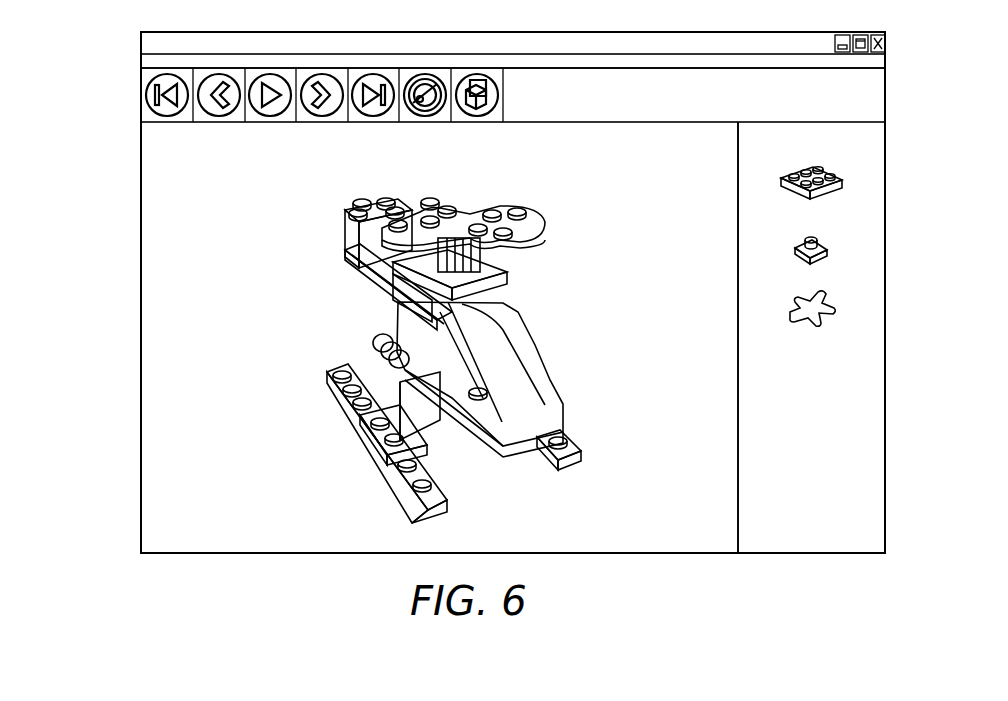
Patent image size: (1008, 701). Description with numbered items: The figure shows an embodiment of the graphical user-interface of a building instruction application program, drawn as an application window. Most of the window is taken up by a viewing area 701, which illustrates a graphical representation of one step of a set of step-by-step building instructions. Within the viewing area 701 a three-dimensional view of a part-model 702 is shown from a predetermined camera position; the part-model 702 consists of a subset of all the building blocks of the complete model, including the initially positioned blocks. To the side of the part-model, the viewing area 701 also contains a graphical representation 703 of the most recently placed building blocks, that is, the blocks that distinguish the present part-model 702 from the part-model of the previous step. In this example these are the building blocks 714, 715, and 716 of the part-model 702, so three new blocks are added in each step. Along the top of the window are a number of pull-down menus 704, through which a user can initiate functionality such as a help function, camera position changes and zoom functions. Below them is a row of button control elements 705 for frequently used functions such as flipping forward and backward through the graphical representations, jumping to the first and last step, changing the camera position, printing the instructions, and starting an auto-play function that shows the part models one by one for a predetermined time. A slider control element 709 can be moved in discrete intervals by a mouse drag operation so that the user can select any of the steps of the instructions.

The viewing area 701 is at (224, 178).
The part-model 702 is at (432, 329).
The graphical representation of the most recently placed building blocks 703 is at (725, 192).
The pull-down menus 704 is at (141, 60).
The button control elements 705 is at (133, 92).
The slider control element 709 is at (803, 560).
The building block 714 is at (365, 350).
The building block 715 is at (505, 265).
The building block 716 is at (430, 205).